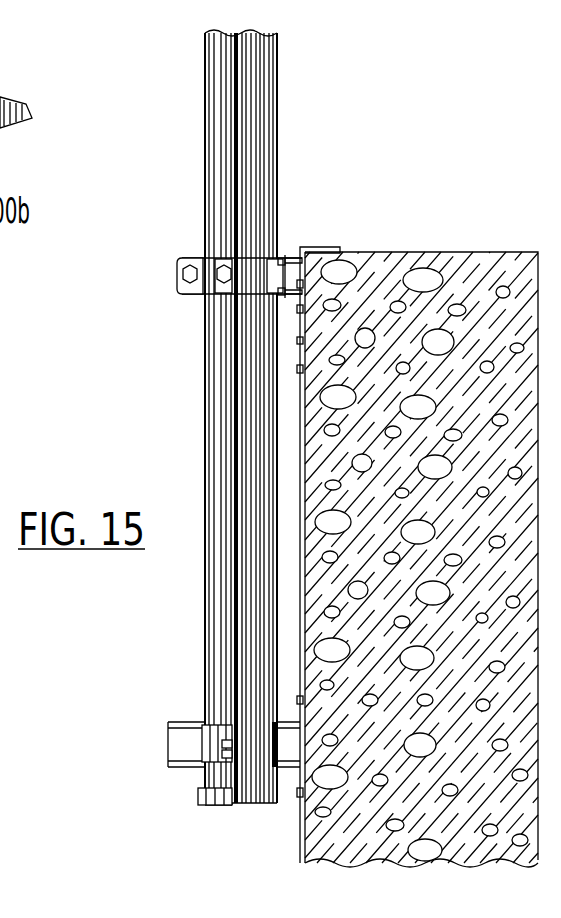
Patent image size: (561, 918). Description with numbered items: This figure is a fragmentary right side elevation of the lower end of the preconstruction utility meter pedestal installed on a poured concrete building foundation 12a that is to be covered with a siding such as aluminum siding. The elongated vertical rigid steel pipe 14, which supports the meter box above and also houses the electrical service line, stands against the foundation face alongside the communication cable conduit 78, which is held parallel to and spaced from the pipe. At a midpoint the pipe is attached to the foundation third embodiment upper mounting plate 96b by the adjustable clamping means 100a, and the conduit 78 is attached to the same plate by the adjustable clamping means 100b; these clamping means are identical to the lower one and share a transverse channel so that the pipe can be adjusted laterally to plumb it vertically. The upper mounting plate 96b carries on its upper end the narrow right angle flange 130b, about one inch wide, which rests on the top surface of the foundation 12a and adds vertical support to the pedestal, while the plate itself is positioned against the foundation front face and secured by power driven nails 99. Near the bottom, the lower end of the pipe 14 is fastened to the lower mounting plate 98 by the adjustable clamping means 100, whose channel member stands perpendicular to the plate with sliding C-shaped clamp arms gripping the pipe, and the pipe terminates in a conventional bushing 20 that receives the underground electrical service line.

The elongated vertical tubular support member 14 is at (220, 105).
The communication cable conduit 78 is at (260, 132).
The right angle flange 130b is at (330, 247).
The building foundation 12a is at (400, 270).
The adjustable clamping means 100a is at (187, 235).
The adjustable clamping means 100b is at (207, 318).
The power driven nails 99 is at (305, 340).
The upper mounting plate 96b is at (305, 385).
The adjustable clamping means 100 is at (171, 695).
The bushing 20 is at (212, 792).
The lower mounting plate 98 is at (298, 805).